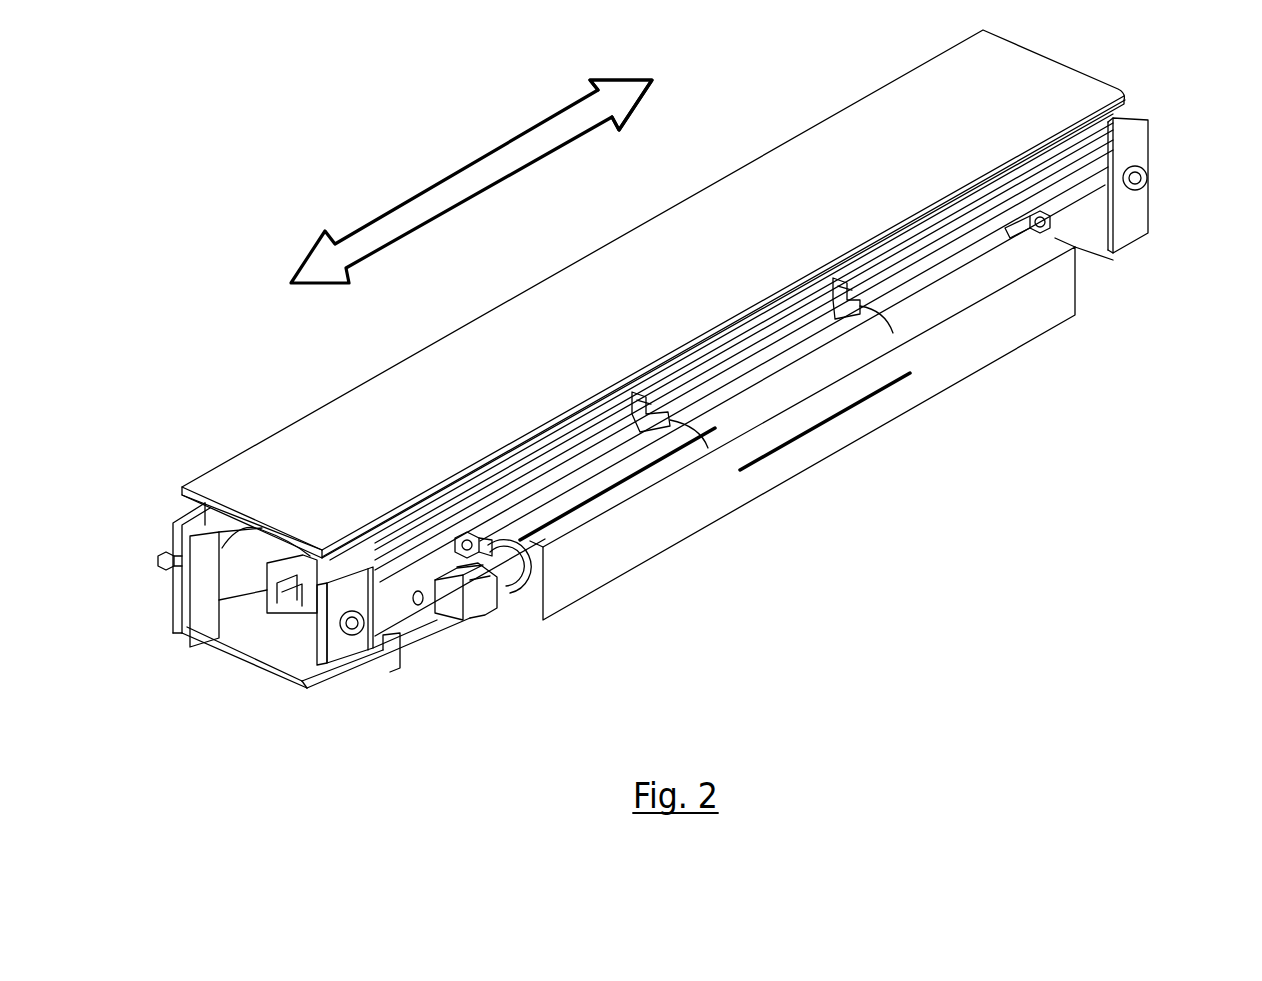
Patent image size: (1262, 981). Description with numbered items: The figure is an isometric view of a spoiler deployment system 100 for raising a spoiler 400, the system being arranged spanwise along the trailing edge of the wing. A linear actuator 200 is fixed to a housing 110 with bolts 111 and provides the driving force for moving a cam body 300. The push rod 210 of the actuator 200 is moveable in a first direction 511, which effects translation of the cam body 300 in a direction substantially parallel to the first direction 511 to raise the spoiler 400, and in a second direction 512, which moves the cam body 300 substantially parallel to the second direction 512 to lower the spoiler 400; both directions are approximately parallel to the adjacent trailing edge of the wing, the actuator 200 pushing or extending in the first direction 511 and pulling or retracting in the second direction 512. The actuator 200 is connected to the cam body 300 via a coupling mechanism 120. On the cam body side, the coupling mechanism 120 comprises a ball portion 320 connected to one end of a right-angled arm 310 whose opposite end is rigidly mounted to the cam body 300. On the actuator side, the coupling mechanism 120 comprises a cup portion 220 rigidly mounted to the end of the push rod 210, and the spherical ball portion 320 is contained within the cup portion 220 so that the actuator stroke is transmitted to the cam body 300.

The spoiler deployment system 100 is at (941, 472).
The housing 110 is at (1097, 247).
The bolts 111 is at (1060, 220).
The coupling mechanism 120 is at (506, 638).
The linear actuator 200 is at (735, 488).
The push rod 210 is at (517, 600).
The cup portion 220 is at (452, 630).
The cam body 300 is at (247, 612).
The right-angled arm 310 is at (393, 653).
The ball portion 320 is at (473, 618).
The spoiler 400 is at (583, 278).
The first direction 511 is at (325, 263).
The second direction 512 is at (620, 96).